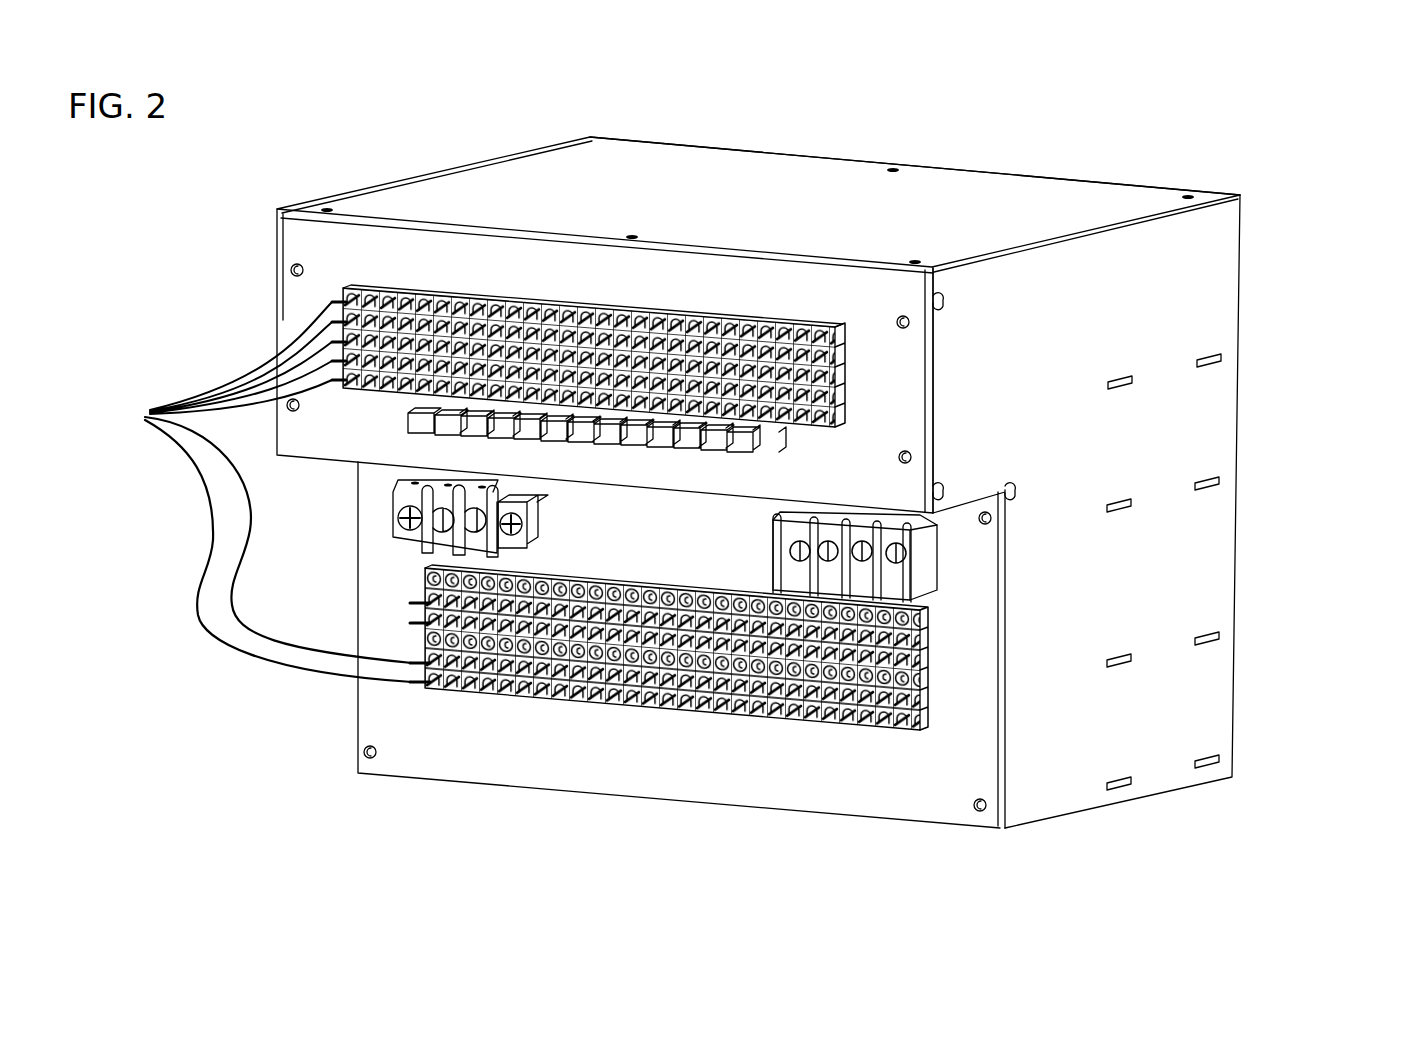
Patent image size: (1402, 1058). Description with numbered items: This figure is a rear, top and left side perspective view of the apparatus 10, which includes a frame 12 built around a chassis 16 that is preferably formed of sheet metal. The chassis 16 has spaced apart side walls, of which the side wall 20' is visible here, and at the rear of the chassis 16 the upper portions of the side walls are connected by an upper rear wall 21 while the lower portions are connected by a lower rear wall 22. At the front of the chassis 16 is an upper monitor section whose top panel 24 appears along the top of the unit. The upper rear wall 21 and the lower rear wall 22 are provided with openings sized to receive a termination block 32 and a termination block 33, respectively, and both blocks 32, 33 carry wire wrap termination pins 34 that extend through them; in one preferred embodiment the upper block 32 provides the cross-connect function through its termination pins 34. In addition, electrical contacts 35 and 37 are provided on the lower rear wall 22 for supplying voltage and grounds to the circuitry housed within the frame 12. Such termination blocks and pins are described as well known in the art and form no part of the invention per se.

The apparatus 10 is at (1134, 152).
The frame 12 is at (928, 172).
The chassis 16 is at (418, 175).
The side wall 20' is at (1162, 511).
The upper rear wall 21 is at (292, 246).
The lower rear wall 22 is at (933, 795).
The top panel 24 is at (728, 172).
The termination block 32 is at (628, 302).
The termination block 33 is at (618, 706).
The wire wrap termination pins 34 is at (261, 492).
The electrical contacts 35 is at (388, 520).
The electrical contacts 37 is at (945, 572).